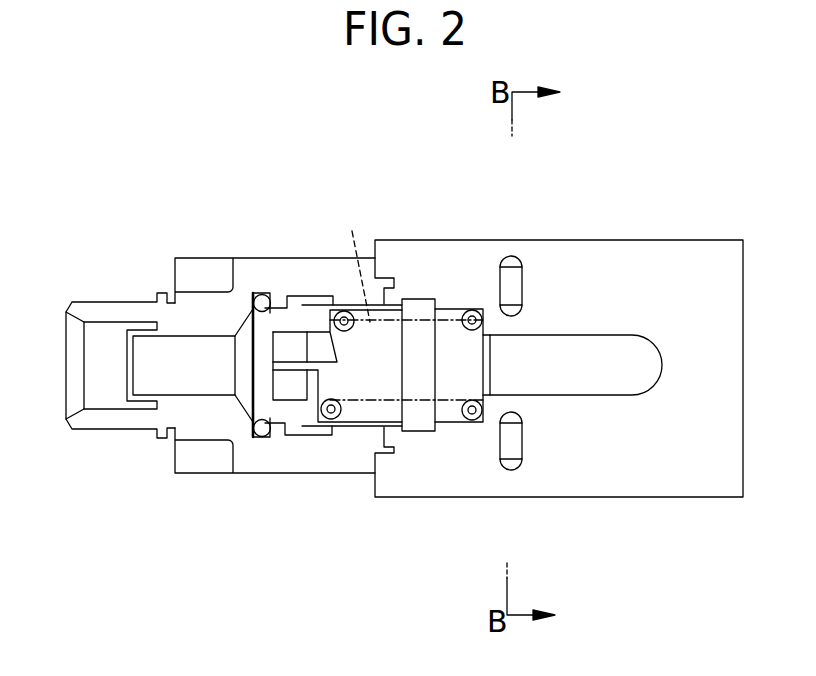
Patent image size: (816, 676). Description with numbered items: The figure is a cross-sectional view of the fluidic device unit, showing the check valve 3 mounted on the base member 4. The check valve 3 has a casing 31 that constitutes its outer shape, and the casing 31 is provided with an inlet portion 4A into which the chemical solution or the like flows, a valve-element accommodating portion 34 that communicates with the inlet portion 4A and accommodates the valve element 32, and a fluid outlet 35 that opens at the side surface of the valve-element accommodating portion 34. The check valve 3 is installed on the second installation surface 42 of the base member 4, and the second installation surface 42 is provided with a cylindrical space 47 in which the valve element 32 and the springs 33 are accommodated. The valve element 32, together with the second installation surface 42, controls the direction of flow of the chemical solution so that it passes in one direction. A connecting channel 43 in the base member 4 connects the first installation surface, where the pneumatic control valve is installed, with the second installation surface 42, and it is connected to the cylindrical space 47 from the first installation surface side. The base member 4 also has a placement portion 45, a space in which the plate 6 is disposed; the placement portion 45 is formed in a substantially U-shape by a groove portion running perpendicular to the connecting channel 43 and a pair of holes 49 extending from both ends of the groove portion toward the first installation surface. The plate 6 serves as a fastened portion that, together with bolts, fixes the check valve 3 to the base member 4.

The check valve 3 is at (178, 250).
The base member 4 is at (704, 236).
The inlet portion 4A is at (95, 300).
The plate 6 is at (516, 285).
The casing 31 is at (245, 260).
The valve element 32 is at (262, 363).
The springs 33 is at (467, 420).
The valve-element accommodating portion 34 is at (354, 262).
The fluid outlet 35 is at (300, 296).
The second installation surface 42 is at (378, 438).
The connecting channel 43 is at (627, 340).
The placement portion 45 is at (542, 369).
The cylindrical space 47 is at (413, 410).
The holes 49 is at (508, 257).